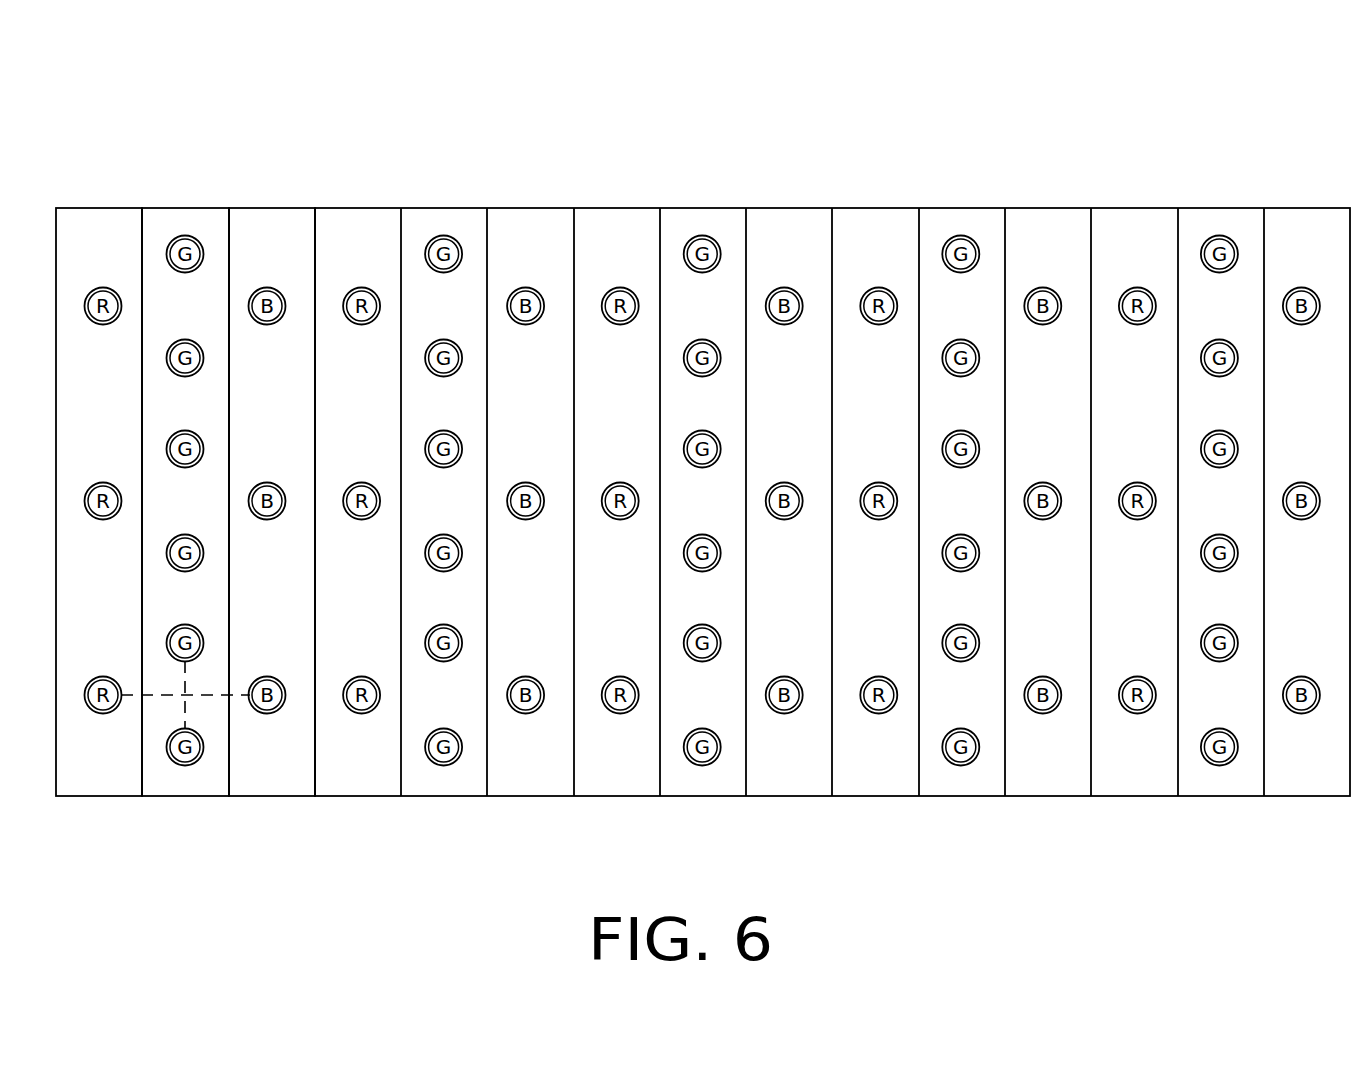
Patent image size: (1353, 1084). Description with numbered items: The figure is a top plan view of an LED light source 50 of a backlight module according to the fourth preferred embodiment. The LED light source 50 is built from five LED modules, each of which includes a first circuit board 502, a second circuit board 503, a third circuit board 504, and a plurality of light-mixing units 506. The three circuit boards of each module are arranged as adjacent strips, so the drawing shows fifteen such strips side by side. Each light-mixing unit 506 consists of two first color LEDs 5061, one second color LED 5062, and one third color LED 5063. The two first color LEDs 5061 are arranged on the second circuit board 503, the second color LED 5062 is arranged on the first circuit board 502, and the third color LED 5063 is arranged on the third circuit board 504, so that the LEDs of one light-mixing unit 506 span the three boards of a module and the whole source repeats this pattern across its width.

The LED light source 50 is at (730, 81).
The first circuit board 502 is at (102, 230).
The second circuit board 503 is at (187, 225).
The third circuit board 504 is at (262, 237).
The light-mixing unit 506 is at (310, 855).
The first color LEDs 5061 is at (190, 660).
The second color LED 5062 is at (103, 714).
The third color LED 5063 is at (268, 714).